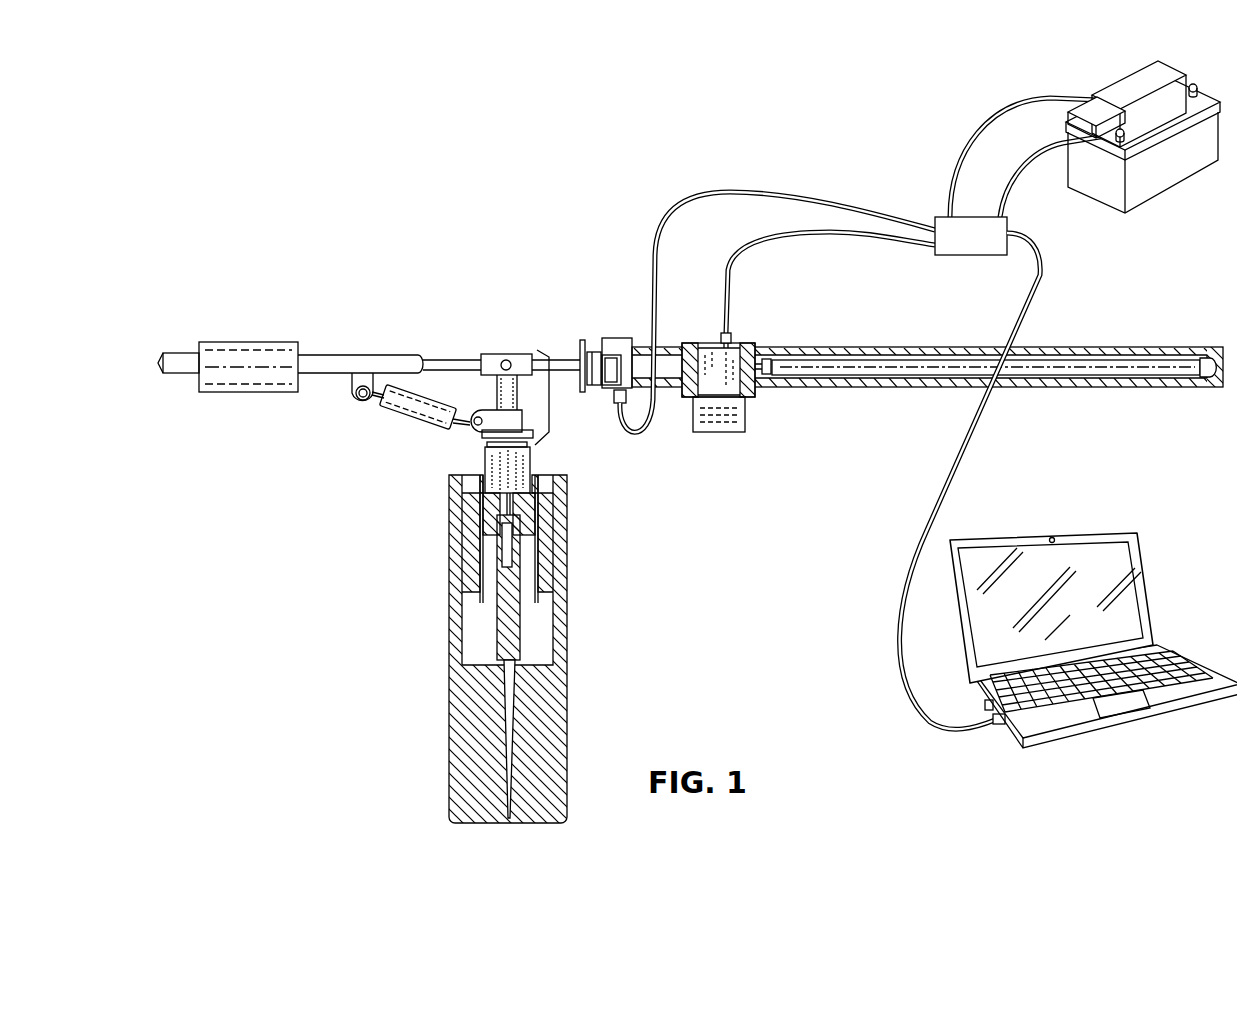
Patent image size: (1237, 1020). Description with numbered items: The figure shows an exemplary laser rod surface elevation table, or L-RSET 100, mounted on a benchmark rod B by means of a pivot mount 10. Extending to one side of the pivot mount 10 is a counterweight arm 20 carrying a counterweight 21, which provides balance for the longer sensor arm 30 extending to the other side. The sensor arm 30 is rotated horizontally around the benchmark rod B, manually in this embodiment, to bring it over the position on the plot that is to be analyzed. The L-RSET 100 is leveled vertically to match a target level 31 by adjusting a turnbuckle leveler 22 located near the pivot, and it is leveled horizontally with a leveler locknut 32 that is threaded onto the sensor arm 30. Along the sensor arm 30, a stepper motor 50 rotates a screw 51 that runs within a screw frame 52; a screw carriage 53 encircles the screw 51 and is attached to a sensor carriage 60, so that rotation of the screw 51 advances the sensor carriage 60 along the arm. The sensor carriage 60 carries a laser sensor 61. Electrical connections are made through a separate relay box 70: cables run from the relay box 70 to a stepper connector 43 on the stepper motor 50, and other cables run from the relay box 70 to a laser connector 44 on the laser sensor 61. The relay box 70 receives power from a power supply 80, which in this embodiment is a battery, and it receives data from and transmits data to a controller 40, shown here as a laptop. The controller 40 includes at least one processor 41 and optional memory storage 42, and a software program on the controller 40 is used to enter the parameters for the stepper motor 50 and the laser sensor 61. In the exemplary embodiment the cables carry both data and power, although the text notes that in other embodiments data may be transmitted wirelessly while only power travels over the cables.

The laser rod surface elevation table (L-RSET) 100 is at (332, 147).
The pivot mount 10 is at (550, 395).
The counterweight arm 20 is at (455, 353).
The counterweight 21 is at (250, 342).
The turnbuckle leveler 22 is at (440, 392).
The sensor arm 30 is at (557, 353).
The target level 31 is at (630, 337).
The leveler locknut 32 is at (580, 352).
The controller 40 is at (1147, 580).
The processor 41 is at (986, 705).
The memory storage 42 is at (1000, 716).
The stepper connector 43 is at (645, 417).
The laser connector 44 is at (724, 333).
The stepper motor 50 is at (616, 403).
The screw 51 is at (932, 348).
The screw frame 52 is at (832, 348).
The screw carriage 53 is at (768, 358).
The sensor carriage 60 is at (758, 392).
The laser sensor 61 is at (720, 432).
The relay box 70 is at (965, 256).
The power supply 80 is at (1172, 188).
The benchmark rod B is at (513, 688).